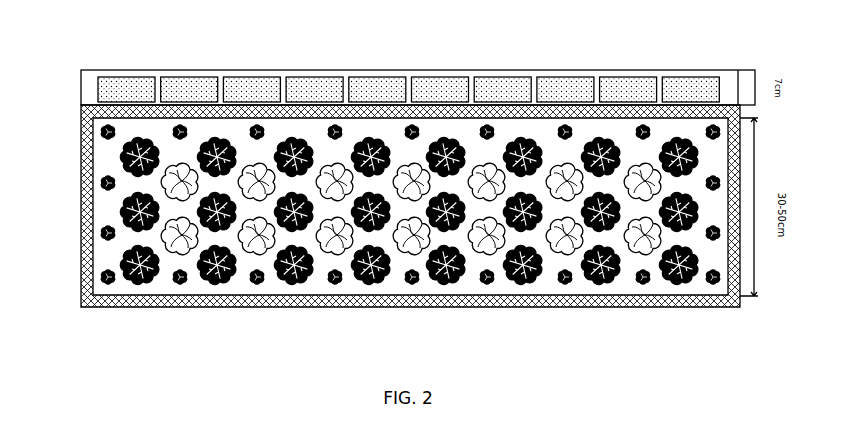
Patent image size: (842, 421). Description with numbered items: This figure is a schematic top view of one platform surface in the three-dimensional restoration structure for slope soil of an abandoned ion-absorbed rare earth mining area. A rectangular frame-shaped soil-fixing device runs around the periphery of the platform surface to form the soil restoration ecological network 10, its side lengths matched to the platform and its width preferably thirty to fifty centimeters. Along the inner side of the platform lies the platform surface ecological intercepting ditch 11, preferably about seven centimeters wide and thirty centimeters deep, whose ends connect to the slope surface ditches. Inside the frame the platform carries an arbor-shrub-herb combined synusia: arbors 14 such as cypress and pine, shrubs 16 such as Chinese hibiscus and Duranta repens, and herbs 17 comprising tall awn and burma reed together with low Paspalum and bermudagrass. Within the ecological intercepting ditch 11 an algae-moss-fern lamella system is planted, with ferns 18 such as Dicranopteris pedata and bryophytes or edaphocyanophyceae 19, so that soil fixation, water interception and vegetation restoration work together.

The soil restoration ecological network 10 is at (80, 182).
The ecological intercepting ditch 11 is at (81, 79).
The arbor 14 is at (250, 253).
The shrub 16 is at (447, 283).
The herb 17 is at (646, 282).
The fern 18 is at (195, 76).
The bryophytes or edaphocyanophyceae 19 is at (383, 82).